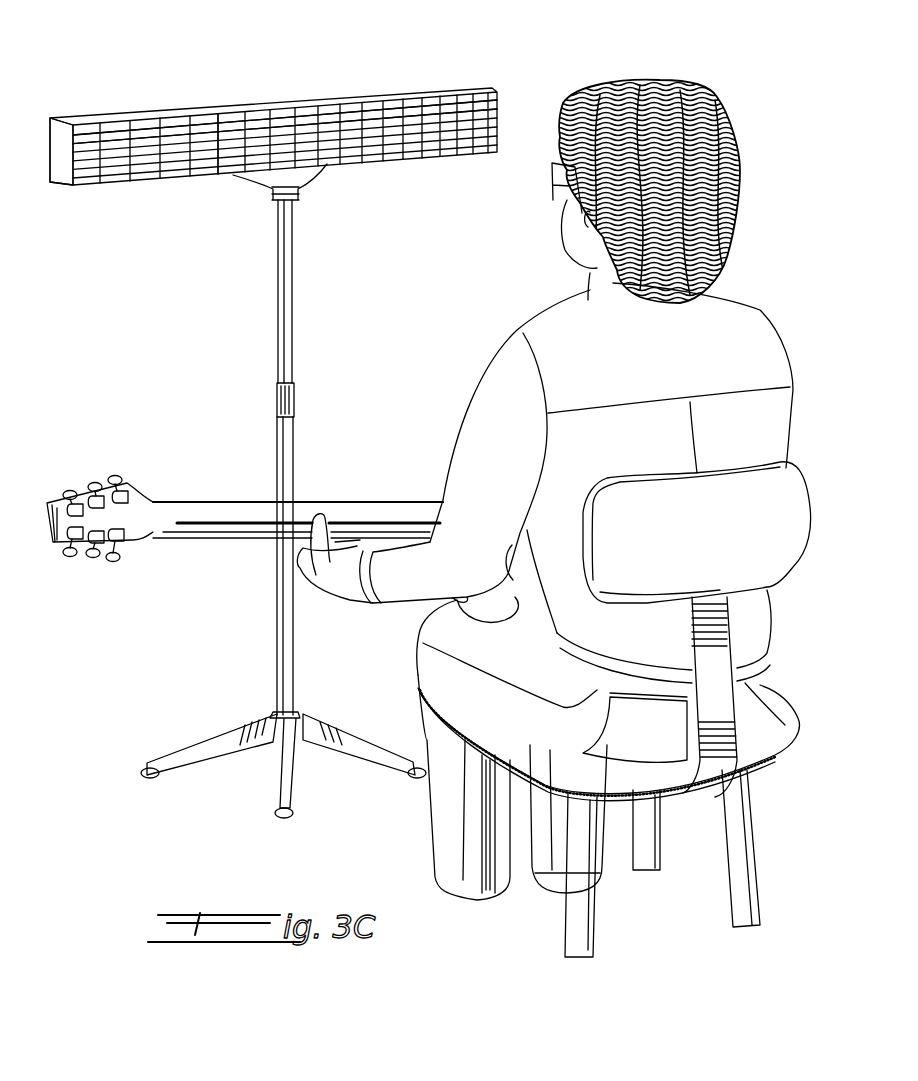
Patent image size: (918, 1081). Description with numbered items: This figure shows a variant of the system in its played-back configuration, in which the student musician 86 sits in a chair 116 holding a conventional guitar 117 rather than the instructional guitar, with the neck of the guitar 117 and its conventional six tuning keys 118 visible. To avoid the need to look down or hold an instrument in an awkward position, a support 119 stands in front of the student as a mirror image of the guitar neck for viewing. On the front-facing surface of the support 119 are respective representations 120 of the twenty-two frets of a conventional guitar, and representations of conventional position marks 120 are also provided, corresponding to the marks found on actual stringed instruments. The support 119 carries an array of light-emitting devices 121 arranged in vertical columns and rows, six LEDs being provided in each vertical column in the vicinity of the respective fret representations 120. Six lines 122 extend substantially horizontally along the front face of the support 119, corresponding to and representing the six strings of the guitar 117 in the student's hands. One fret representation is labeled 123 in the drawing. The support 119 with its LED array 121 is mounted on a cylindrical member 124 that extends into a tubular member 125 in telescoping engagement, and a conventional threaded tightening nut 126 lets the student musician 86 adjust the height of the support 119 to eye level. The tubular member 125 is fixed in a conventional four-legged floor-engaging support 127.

The student musician 86 is at (574, 62).
The chair 116 is at (633, 923).
The conventional guitar 117 is at (245, 524).
The tuning keys 118 is at (113, 476).
The support 119 is at (356, 90).
The representations of frets 120 is at (112, 130).
The light-emitting devices 121 is at (92, 138).
The lines 122 is at (73, 125).
The fret indicator 123 is at (226, 124).
The cylindrical member 124 is at (292, 265).
The tubular member 125 is at (294, 456).
The threaded tightening nut 126 is at (294, 400).
The floor engaging support 127 is at (238, 785).